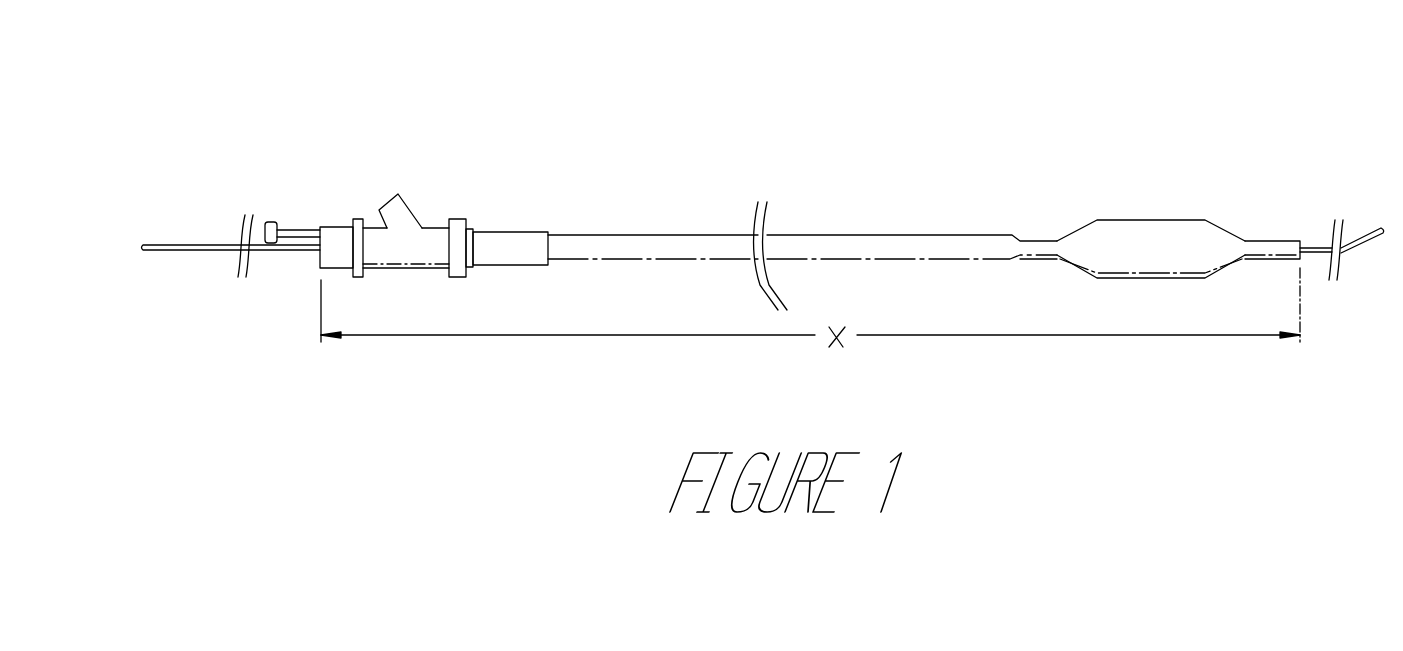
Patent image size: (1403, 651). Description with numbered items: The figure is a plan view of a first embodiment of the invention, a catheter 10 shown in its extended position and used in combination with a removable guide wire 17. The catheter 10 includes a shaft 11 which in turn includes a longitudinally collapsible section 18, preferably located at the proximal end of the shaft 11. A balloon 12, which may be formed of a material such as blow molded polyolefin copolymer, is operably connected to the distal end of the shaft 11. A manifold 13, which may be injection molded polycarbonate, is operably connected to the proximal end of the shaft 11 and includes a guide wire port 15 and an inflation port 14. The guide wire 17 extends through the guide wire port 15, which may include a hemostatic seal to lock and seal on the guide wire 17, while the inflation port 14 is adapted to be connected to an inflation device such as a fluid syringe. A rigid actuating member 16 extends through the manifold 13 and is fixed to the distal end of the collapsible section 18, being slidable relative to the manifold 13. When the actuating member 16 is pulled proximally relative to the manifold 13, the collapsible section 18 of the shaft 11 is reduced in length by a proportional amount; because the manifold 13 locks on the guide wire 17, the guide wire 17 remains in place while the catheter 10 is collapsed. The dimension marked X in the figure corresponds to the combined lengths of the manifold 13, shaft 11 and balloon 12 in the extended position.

The catheter 10 is at (810, 75).
The shaft 11 is at (875, 190).
The balloon 12 is at (1165, 188).
The manifold 13 is at (402, 117).
The inflation port 14 is at (409, 210).
The guide wire port 15 is at (333, 247).
The actuating member 16 is at (289, 225).
The guide wire 17 is at (188, 242).
The collapsible section 18 is at (645, 190).